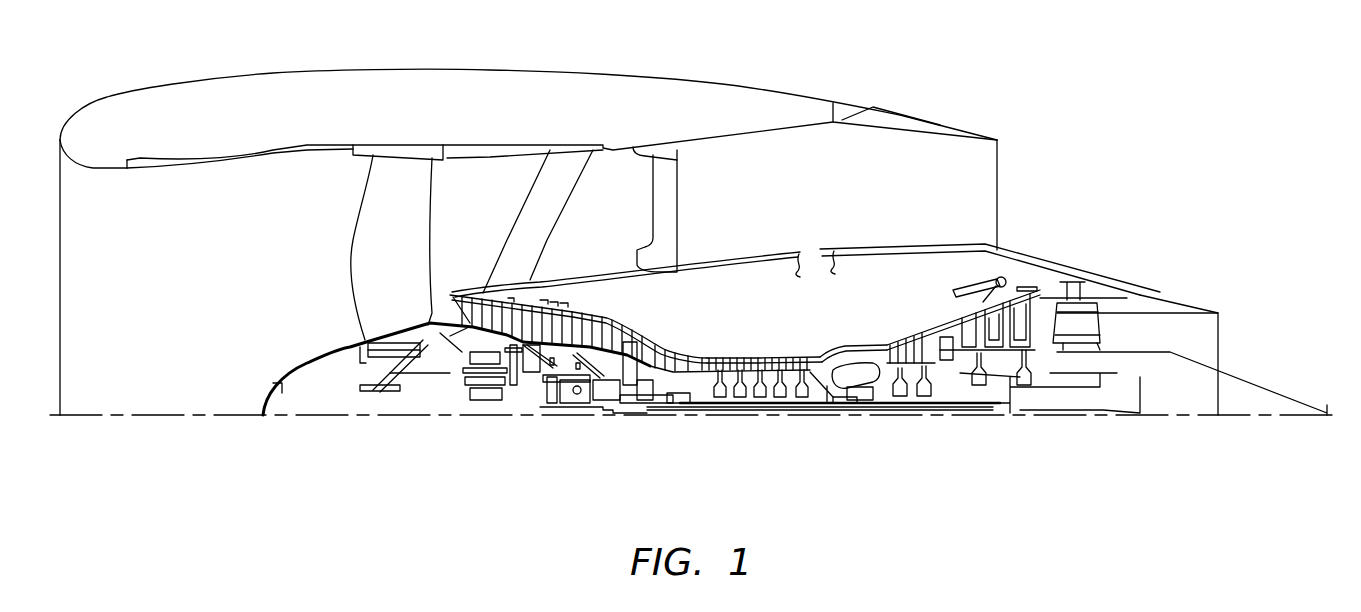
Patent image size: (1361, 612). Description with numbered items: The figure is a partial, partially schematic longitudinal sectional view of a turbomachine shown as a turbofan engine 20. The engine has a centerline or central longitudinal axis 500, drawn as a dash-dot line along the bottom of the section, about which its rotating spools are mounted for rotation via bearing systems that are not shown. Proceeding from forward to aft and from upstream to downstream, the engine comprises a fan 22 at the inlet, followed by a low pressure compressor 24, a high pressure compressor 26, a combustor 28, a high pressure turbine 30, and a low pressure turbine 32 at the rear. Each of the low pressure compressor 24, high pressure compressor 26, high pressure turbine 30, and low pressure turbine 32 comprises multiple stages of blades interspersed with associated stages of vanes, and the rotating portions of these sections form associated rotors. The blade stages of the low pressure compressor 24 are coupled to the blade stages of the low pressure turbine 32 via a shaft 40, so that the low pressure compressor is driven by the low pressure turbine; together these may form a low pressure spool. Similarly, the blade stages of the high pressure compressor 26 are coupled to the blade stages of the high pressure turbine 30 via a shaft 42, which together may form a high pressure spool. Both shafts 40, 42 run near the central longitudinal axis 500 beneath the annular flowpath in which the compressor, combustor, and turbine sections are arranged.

The turbofan engine 20 is at (902, 90).
The fan 22 is at (443, 190).
The low pressure compressor 24 is at (567, 296).
The high pressure compressor 26 is at (722, 341).
The combustor 28 is at (872, 325).
The high pressure turbine 30 is at (905, 322).
The low pressure turbine 32 is at (1027, 272).
The shaft 40 is at (852, 416).
The shaft 42 is at (872, 403).
The central longitudinal axis 500 is at (150, 417).